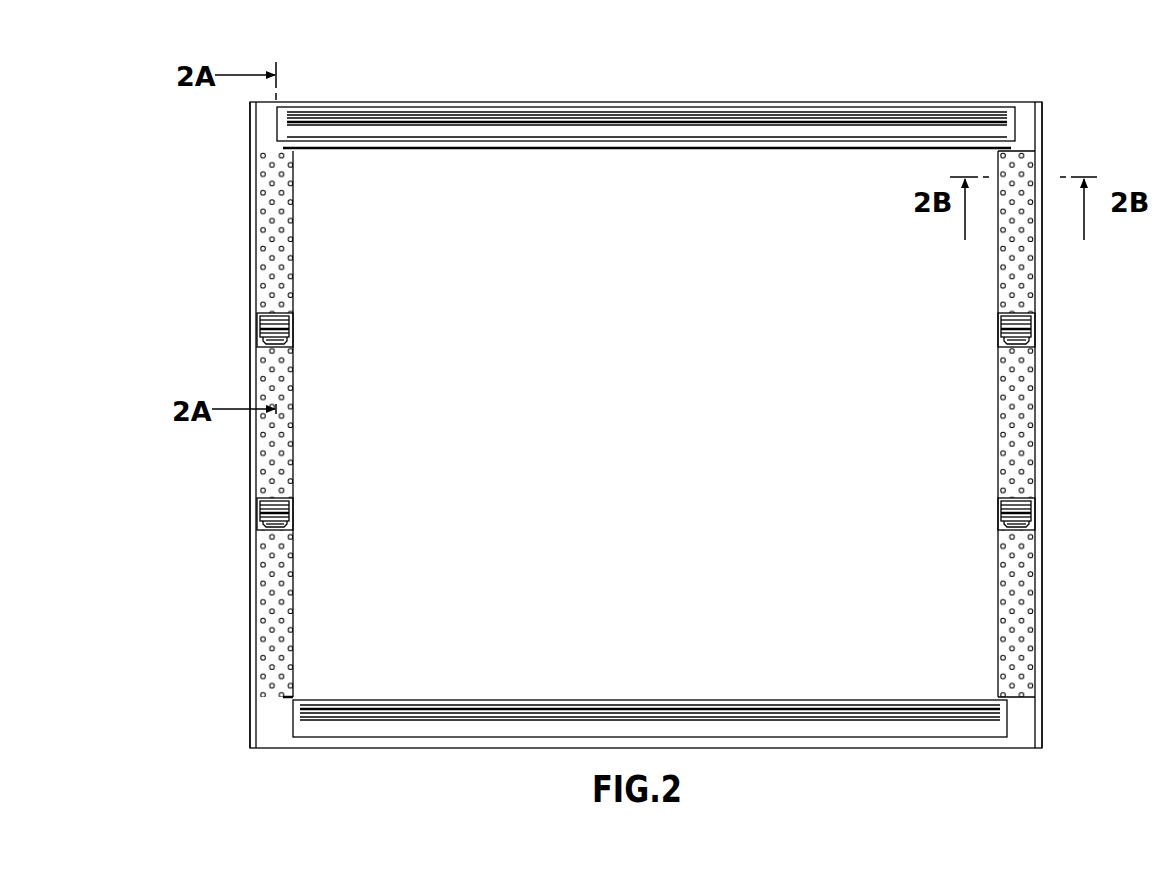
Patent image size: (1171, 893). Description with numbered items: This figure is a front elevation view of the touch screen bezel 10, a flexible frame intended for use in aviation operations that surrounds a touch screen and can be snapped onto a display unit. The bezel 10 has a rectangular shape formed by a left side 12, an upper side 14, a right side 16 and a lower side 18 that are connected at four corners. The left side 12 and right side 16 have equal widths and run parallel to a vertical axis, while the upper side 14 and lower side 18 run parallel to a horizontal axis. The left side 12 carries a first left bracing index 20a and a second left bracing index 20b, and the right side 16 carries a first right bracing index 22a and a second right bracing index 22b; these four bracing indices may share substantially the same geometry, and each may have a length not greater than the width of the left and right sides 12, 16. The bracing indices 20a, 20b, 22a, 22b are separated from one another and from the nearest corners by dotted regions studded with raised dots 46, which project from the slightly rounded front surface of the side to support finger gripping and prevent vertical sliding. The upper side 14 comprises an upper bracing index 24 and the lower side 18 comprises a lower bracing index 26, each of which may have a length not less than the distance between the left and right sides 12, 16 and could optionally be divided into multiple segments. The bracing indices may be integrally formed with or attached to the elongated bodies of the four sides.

The touch screen bezel 10 is at (962, 88).
The left side 12 is at (253, 457).
The upper side 14 is at (742, 103).
The right side 16 is at (1046, 385).
The lower side 18 is at (785, 750).
The first left bracing index 20a is at (262, 323).
The second left bracing index 20b is at (262, 515).
The first right bracing index 22a is at (1036, 330).
The second right bracing index 22b is at (1036, 505).
The upper bracing index 24 is at (596, 130).
The lower bracing index 26 is at (750, 700).
The raised dots 46 is at (263, 242).